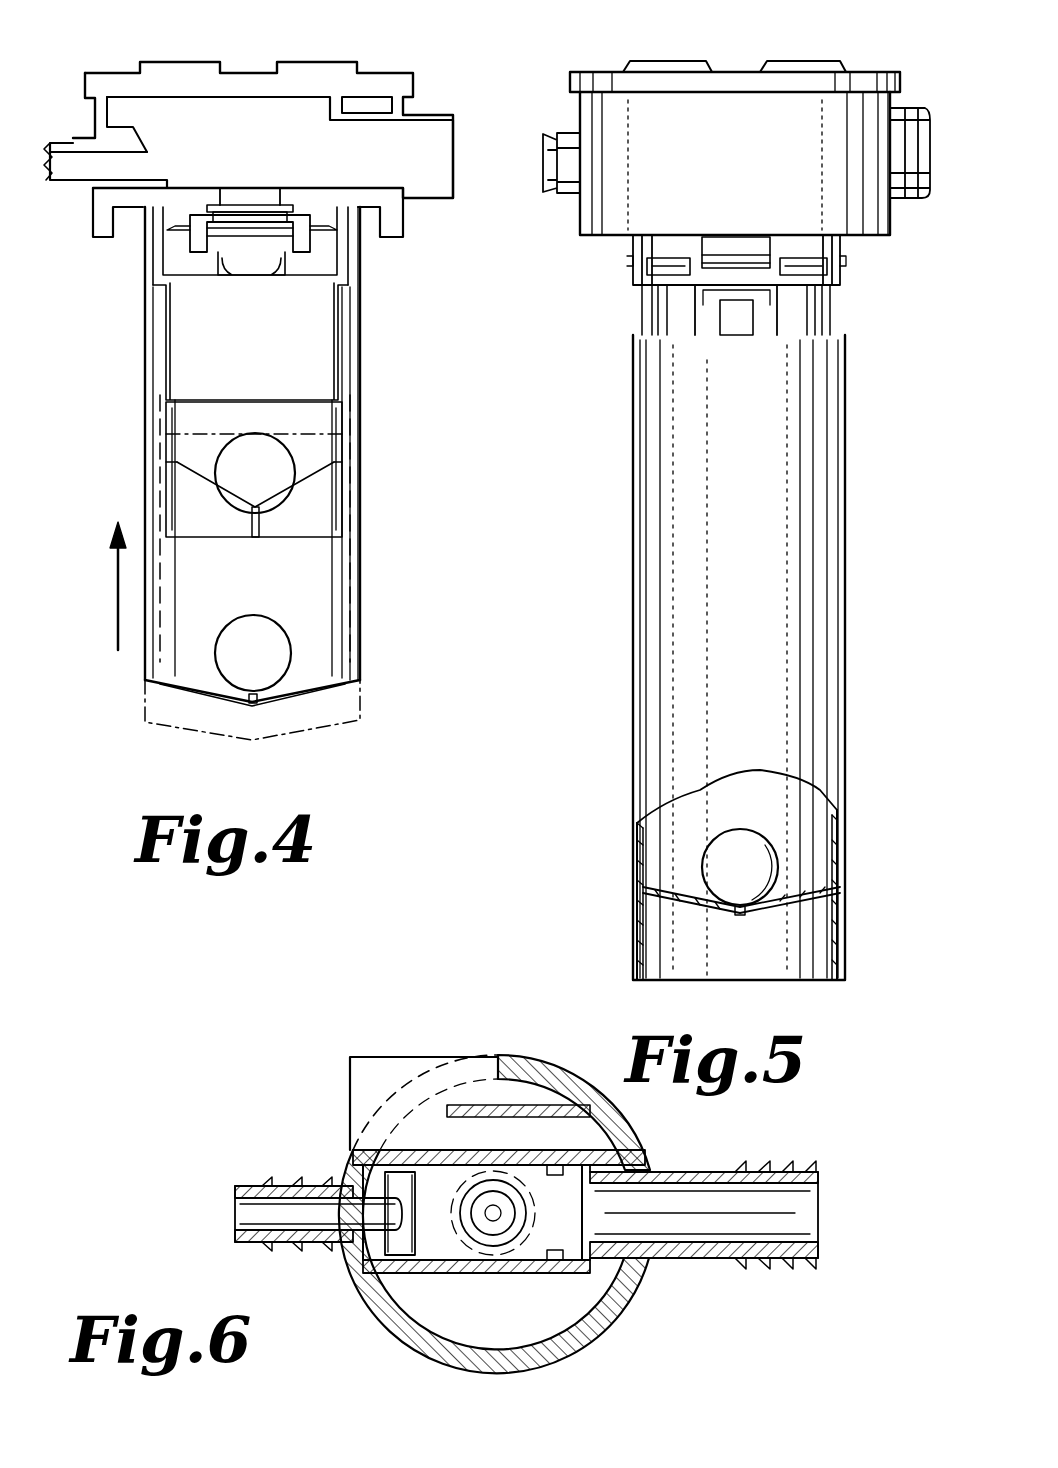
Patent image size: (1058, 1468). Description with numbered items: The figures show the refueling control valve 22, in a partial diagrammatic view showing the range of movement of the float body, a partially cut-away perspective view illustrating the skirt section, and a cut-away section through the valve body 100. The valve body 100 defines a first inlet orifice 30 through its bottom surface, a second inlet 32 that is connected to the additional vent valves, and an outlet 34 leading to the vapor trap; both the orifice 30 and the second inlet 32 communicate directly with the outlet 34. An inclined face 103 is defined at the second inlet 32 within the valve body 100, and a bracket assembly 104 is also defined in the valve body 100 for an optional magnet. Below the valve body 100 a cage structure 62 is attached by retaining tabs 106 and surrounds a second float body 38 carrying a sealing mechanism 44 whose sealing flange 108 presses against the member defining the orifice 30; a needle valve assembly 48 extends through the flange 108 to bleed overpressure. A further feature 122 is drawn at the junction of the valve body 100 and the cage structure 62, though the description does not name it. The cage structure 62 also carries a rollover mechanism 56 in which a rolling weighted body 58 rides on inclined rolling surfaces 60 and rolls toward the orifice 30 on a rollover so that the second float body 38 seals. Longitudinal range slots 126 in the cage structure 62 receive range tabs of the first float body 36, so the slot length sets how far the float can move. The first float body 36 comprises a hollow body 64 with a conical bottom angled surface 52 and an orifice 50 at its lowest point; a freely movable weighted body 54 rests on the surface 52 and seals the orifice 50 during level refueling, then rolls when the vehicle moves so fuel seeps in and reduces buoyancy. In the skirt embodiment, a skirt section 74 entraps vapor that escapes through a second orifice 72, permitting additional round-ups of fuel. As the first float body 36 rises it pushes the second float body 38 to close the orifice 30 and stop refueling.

In FIG. 4, the control valve 22 is at (56, 92).
In FIG. 5, the control valve 22 is at (558, 88).
In FIG. 4, the first inlet orifice 30 is at (231, 196).
In FIG. 6, the first inlet orifice 30 is at (530, 1206).
In FIG. 4, the second inlet 32 is at (82, 180).
In FIG. 5, the second inlet 32 is at (548, 166).
In FIG. 6, the second inlet 32 is at (235, 1223).
In FIG. 4, the outlet 34 is at (440, 165).
In FIG. 5, the outlet 34 is at (940, 179).
In FIG. 6, the outlet 34 is at (808, 1214).
In FIG. 4, the first float body 36 is at (362, 628).
In FIG. 5, the first float body 36 is at (876, 606).
In FIG. 4, the second float body 38 is at (180, 336).
In FIG. 4, the sealing mechanism 44 is at (261, 190).
In FIG. 6, the needle valve assembly 48 is at (495, 1221).
In FIG. 4, the orifice 50 is at (265, 702).
In FIG. 5, the orifice 50 is at (740, 916).
In FIG. 4, the bottom angled surface 52 is at (235, 694).
In FIG. 5, the bottom angled surface 52 is at (702, 899).
In FIG. 4, the weighted body 54 is at (260, 636).
In FIG. 5, the weighted body 54 is at (768, 804).
In FIG. 4, the rollover mechanism 56 is at (380, 456).
In FIG. 4, the rolling weighted body 58 is at (245, 499).
In FIG. 4, the inclined rolling surfaces 60 is at (290, 496).
In FIG. 5, the cage structure 62 is at (665, 319).
In FIG. 5, the hollow body 64 is at (668, 859).
In FIG. 5, the second orifice 72 is at (848, 913).
In FIG. 5, the skirt section 74 is at (635, 951).
In FIG. 4, the valve body 100 is at (203, 104).
In FIG. 5, the valve body 100 is at (715, 102).
In FIG. 6, the inclined face 103 is at (402, 1186).
In FIG. 6, the bracket assembly 104 is at (437, 1086).
In FIG. 5, the retaining tabs 106 is at (650, 263).
In FIG. 6, the sealing flange 108 is at (488, 1226).
In FIG. 5, the slot 122 is at (718, 250).
In FIG. 5, the range slots 126 is at (740, 321).